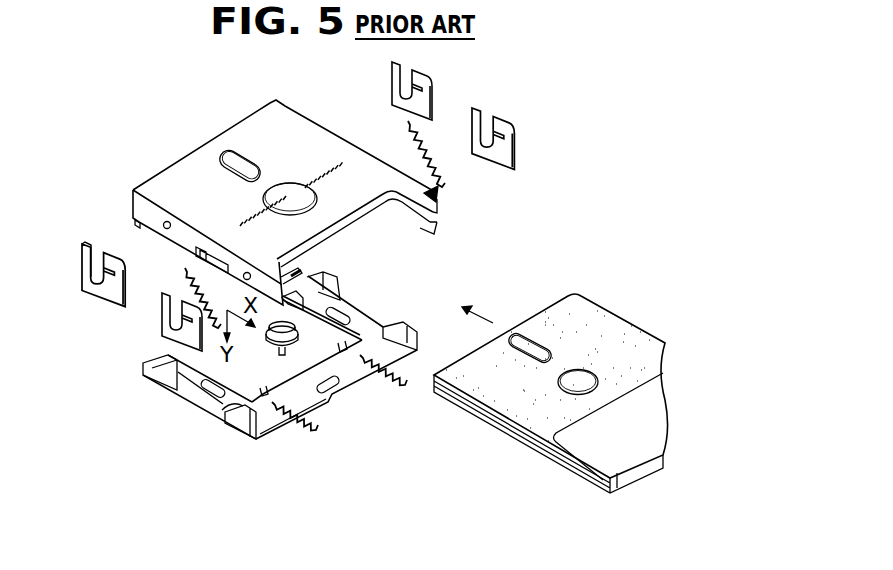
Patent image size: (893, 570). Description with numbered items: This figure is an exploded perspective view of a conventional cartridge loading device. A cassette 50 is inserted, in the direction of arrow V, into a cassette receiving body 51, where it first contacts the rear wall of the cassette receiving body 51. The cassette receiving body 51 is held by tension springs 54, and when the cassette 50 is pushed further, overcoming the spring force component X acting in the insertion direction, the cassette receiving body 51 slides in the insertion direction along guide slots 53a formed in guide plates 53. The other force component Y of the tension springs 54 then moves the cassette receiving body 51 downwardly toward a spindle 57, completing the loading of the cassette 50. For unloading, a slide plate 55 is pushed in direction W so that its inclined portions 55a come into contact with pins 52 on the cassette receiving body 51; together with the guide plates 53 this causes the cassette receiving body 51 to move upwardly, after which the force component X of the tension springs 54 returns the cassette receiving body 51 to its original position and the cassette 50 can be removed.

The cassette 50 is at (607, 332).
The cassette receiving body 51 is at (260, 123).
The pins 52 is at (135, 223).
The guide plates 53 is at (102, 287).
The guide slots 53a is at (87, 260).
The tension springs 54 is at (183, 276).
The slide plate 55 is at (267, 423).
The inclined portions 55a is at (231, 408).
The spindle 57 is at (271, 346).